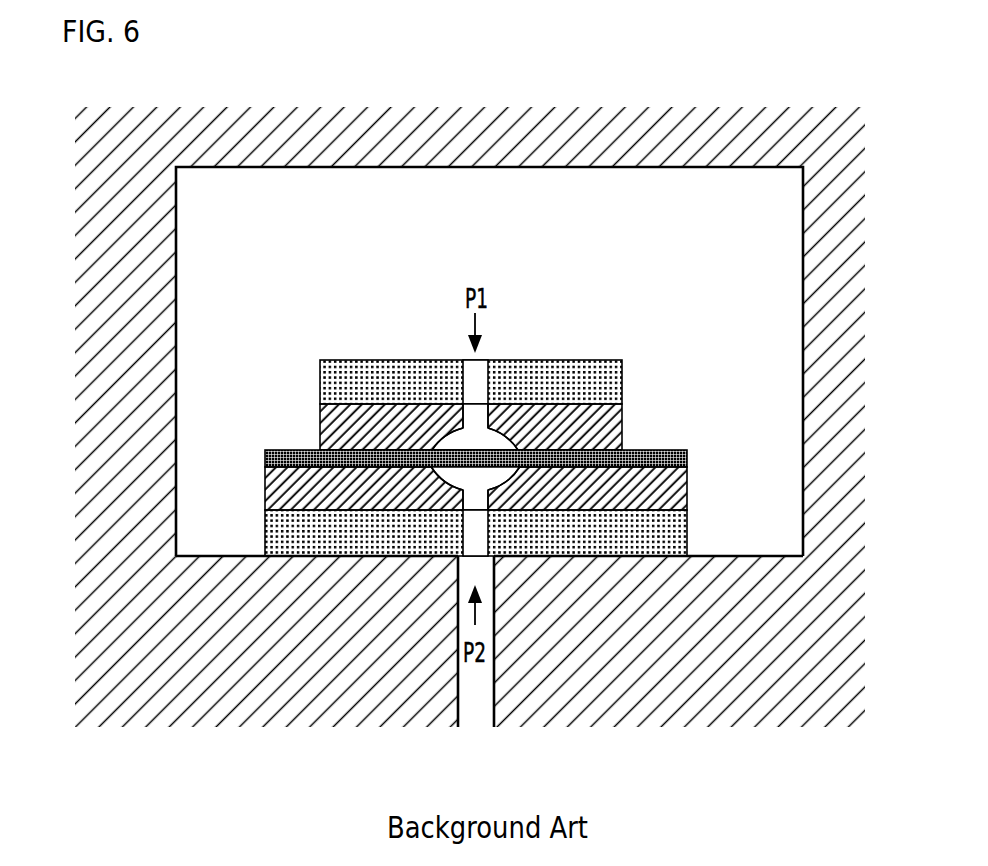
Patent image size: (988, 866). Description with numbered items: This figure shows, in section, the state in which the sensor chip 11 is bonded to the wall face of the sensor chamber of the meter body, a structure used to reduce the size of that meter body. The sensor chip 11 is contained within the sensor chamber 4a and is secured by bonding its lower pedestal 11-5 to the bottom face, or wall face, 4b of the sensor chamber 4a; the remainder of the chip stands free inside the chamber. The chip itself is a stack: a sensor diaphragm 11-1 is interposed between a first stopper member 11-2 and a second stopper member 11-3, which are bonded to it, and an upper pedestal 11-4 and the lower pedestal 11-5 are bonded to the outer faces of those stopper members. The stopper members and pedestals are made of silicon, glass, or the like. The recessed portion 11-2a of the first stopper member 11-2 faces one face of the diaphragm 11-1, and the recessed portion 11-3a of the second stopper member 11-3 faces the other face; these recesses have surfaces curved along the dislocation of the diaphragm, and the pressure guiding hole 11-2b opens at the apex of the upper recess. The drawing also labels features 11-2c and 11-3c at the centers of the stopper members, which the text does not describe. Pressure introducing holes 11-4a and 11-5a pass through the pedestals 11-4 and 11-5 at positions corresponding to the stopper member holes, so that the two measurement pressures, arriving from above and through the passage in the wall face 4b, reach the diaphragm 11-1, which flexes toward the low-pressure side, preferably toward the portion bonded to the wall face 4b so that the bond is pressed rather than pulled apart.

The sensor chamber 4a is at (217, 490).
The bottom face (wall face) of the sensor chamber 4b is at (235, 556).
The sensor chip 11 is at (502, 514).
The sensor diaphragm 11-1 is at (687, 457).
The first stopper member 11-2 is at (487, 368).
The recessed portion of the first stopper member 11-2a is at (492, 432).
The pressure guiding hole of the first stopper member 11-2b is at (357, 445).
The through hole of upper base 11-2c is at (473, 412).
The second stopper member 11-3 is at (479, 402).
The recessed portion of the second stopper member 11-3a is at (440, 440).
The through hole of lower base 11-3c is at (465, 500).
The pedestal 11-4 is at (534, 321).
The pressure introducing hole of the pedestal 11-4a is at (473, 373).
The pedestal 11-5 is at (494, 650).
The pressure introducing hole of the pedestal 11-5a is at (470, 537).